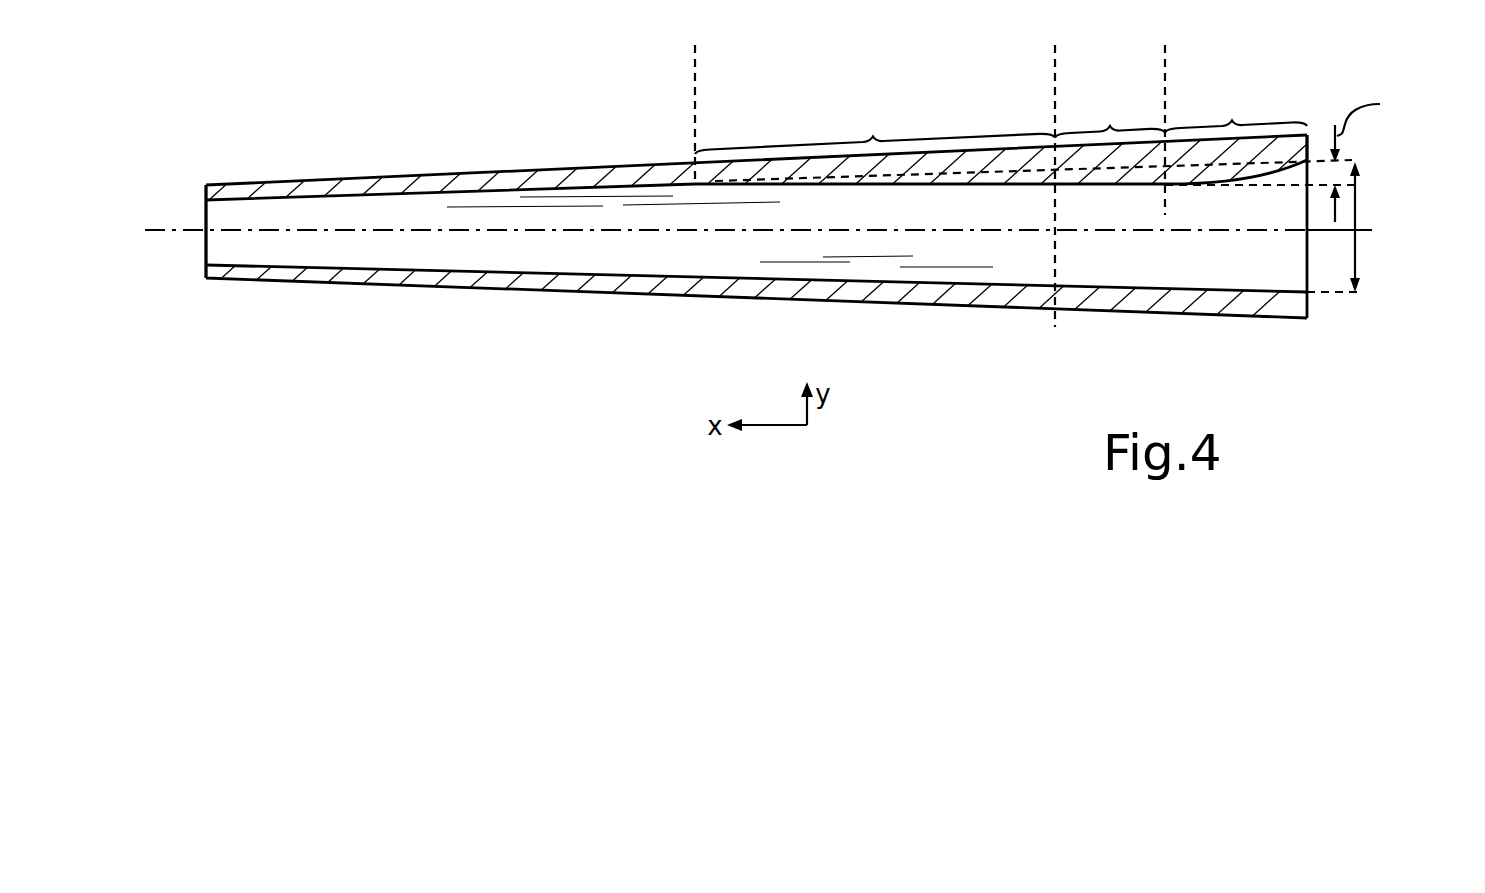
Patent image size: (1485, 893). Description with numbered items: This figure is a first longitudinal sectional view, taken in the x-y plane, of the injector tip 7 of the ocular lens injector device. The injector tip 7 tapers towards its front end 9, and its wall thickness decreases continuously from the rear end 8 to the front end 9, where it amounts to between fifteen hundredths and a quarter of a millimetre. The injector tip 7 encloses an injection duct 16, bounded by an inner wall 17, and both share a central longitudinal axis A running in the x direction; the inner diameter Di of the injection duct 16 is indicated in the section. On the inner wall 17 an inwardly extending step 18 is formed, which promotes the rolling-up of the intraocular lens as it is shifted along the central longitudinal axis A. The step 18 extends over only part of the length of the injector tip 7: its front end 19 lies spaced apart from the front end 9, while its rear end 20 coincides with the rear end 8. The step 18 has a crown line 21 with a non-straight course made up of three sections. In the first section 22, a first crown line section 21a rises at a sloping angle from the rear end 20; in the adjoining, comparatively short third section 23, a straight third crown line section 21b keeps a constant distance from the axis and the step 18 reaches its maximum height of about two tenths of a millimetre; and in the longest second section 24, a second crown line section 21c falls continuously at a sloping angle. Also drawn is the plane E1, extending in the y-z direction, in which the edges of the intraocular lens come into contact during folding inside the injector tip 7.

The injector tip 7 is at (619, 330).
The rear end 8 is at (1319, 334).
The front end 9 is at (200, 295).
The injection duct 16 is at (526, 254).
The inner wall 17 is at (508, 198).
The step 18 is at (1131, 200).
The front end of step 19 is at (694, 183).
The rear end of step 20 is at (1308, 160).
The crown line 21 is at (1167, 200).
The first crown line section 21a is at (1233, 186).
The third crown line section 21b is at (1080, 186).
The second crown line section 21c is at (905, 185).
The first section 22 is at (1236, 112).
The third section 23 is at (1110, 117).
The second section 24 is at (1023, 139).
The plane E1 is at (1053, 248).
The central longitudinal axis A is at (162, 231).
The inner diameter Di is at (1357, 203).